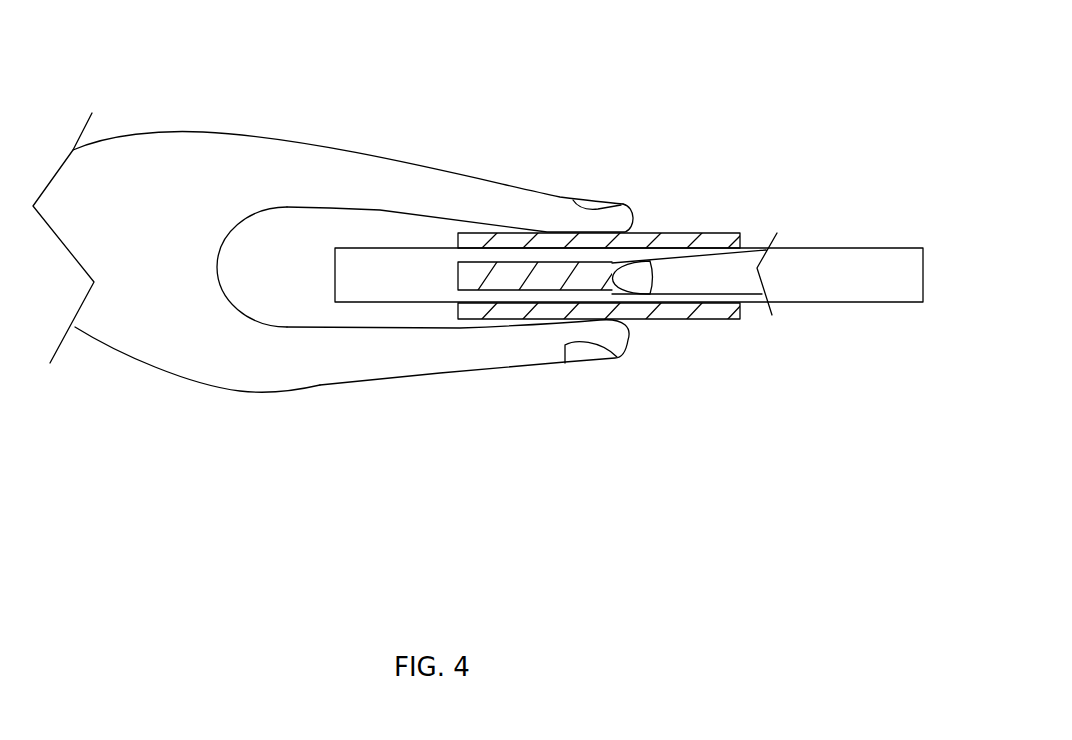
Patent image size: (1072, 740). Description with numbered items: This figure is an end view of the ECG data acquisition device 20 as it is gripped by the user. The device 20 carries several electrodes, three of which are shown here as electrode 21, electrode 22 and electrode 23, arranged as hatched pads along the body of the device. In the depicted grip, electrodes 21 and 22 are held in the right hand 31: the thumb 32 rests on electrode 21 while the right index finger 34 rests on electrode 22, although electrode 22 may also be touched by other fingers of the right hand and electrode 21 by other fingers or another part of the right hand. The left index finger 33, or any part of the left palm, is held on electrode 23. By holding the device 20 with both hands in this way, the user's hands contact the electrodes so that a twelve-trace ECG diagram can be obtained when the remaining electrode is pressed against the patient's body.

The ECG data acquisition device 20 is at (913, 262).
The electrode 21 is at (700, 238).
The electrode 22 is at (720, 313).
The electrode 23 is at (472, 275).
The right hand 31 is at (142, 152).
The thumb 32 is at (465, 195).
The left index finger 33 is at (752, 258).
The right index finger 34 is at (337, 357).